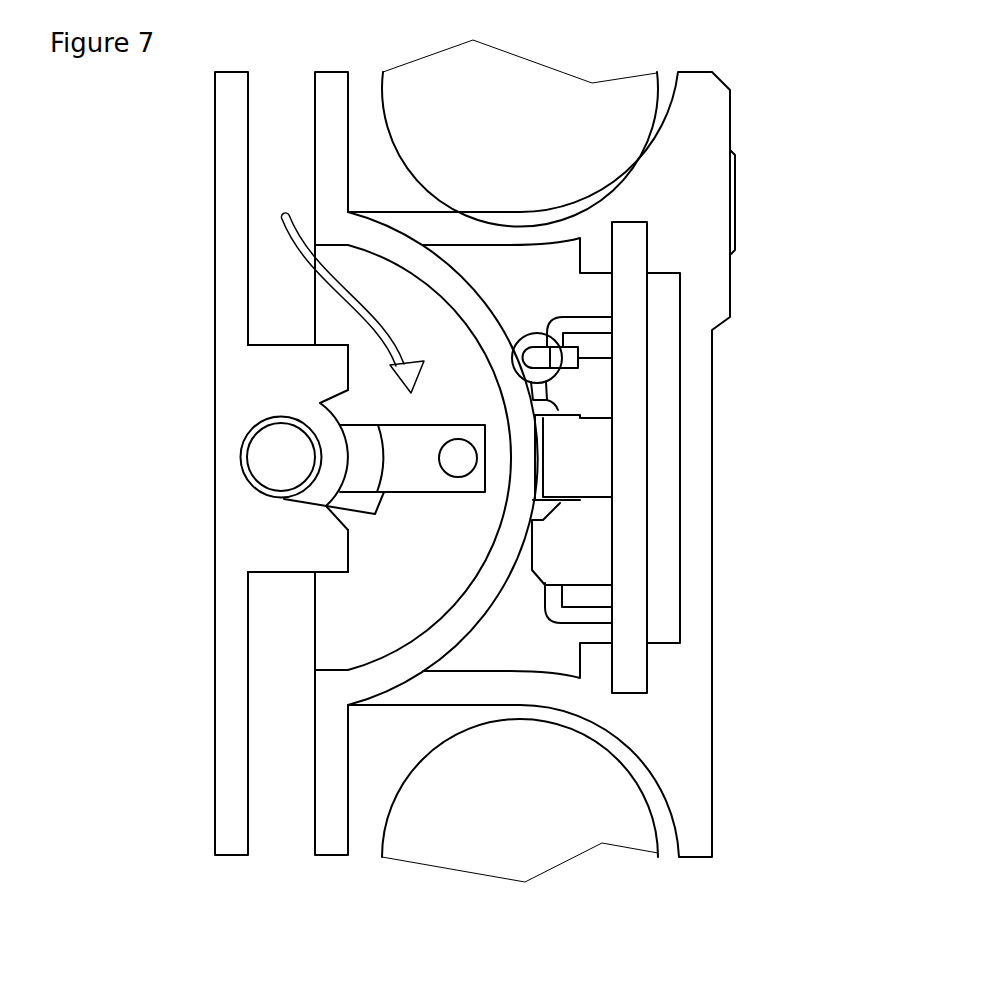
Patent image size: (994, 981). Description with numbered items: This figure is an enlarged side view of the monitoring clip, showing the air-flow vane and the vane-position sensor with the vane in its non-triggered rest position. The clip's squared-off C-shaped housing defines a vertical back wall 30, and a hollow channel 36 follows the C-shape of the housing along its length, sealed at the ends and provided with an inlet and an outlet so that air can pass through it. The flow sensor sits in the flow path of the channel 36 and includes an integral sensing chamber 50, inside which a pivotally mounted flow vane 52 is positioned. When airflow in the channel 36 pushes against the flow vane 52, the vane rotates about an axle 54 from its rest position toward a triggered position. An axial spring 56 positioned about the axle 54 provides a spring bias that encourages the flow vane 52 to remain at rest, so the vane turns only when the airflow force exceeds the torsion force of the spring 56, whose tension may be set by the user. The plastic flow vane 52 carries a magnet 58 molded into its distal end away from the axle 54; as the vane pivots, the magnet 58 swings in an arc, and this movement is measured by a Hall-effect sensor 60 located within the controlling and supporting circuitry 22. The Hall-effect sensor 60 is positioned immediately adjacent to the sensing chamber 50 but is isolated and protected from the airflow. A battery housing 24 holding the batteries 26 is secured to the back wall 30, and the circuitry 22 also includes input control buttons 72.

The controlling and supporting circuitry 22 is at (630, 312).
The battery housing 24 is at (692, 708).
The batteries 26 is at (493, 75).
The back wall 30 is at (228, 152).
The channel 36 is at (272, 748).
The sensing chamber 50 is at (365, 618).
The flow vane 52 is at (403, 482).
The axle 54 is at (257, 427).
The axial spring 56 is at (297, 505).
The magnet 58 is at (457, 468).
The Hall-effect sensor 60 is at (583, 457).
The input control buttons 72 is at (735, 197).